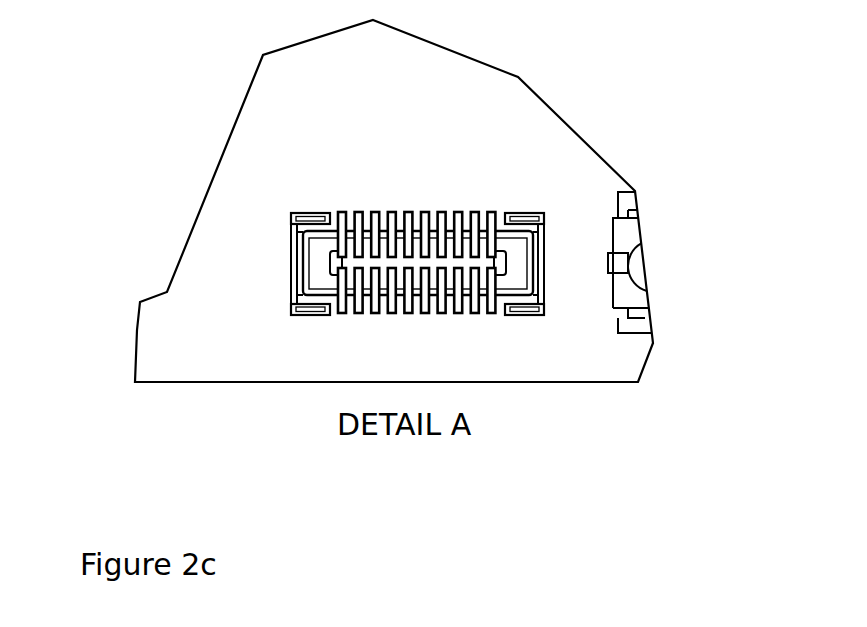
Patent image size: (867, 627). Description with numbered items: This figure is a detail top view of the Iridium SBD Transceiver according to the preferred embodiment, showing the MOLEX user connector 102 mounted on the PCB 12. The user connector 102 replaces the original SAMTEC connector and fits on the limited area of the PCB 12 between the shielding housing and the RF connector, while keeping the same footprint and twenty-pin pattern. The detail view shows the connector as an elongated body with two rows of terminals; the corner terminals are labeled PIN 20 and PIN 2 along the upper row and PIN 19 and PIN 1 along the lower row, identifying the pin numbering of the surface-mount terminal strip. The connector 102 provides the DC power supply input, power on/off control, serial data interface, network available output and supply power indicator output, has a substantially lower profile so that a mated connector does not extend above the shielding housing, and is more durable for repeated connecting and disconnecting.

The PCB 12 is at (563, 335).
The MOLEX 501591-2011 user connector 102 is at (347, 262).
The pin 20 PIN 20 is at (345, 212).
The pin 2 PIN 2 is at (493, 213).
The pin 19 PIN 19 is at (343, 312).
The pin 1 PIN 1 is at (490, 312).